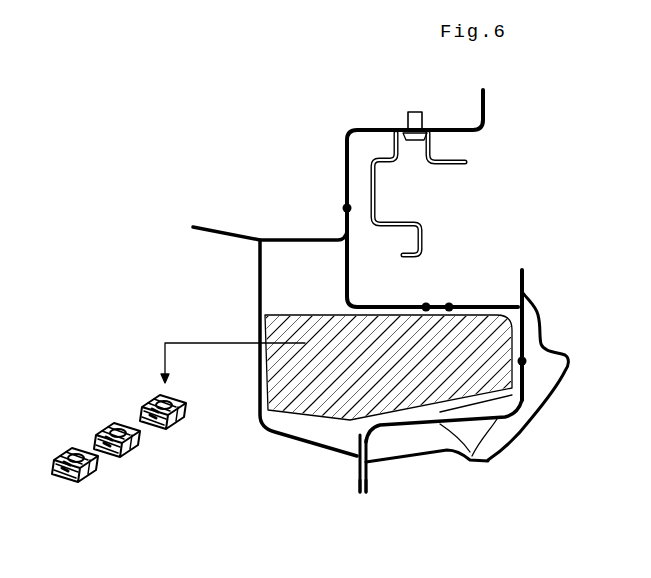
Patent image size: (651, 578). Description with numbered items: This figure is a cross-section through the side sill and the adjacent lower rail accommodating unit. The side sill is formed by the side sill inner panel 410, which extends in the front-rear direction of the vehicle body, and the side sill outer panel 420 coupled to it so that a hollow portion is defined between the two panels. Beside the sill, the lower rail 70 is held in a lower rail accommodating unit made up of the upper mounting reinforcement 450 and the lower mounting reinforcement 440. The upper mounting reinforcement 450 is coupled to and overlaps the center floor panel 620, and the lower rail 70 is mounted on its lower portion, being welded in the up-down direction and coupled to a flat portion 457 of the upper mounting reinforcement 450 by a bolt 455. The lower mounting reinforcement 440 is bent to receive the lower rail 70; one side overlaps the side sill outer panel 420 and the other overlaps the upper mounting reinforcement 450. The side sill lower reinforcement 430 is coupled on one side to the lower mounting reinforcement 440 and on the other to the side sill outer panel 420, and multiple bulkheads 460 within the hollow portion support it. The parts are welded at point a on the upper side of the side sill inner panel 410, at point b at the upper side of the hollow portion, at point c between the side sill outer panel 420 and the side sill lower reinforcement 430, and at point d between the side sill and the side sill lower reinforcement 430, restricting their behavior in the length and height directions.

The lower rail 70 is at (444, 154).
The side sill inner panel 410 is at (312, 440).
The side sill outer panel 420 is at (472, 456).
The side sill lower reinforcement 430 is at (509, 443).
The lower mounting reinforcement 440 is at (481, 300).
The upper mounting reinforcement 450 is at (486, 102).
The bolt 455 is at (415, 111).
The flat portion 457 is at (367, 128).
The bulkheads 460 is at (96, 412).
The center floor panel 620 is at (205, 230).
The point a is at (344, 207).
The point b is at (426, 304).
The point c is at (524, 360).
The point d is at (370, 481).